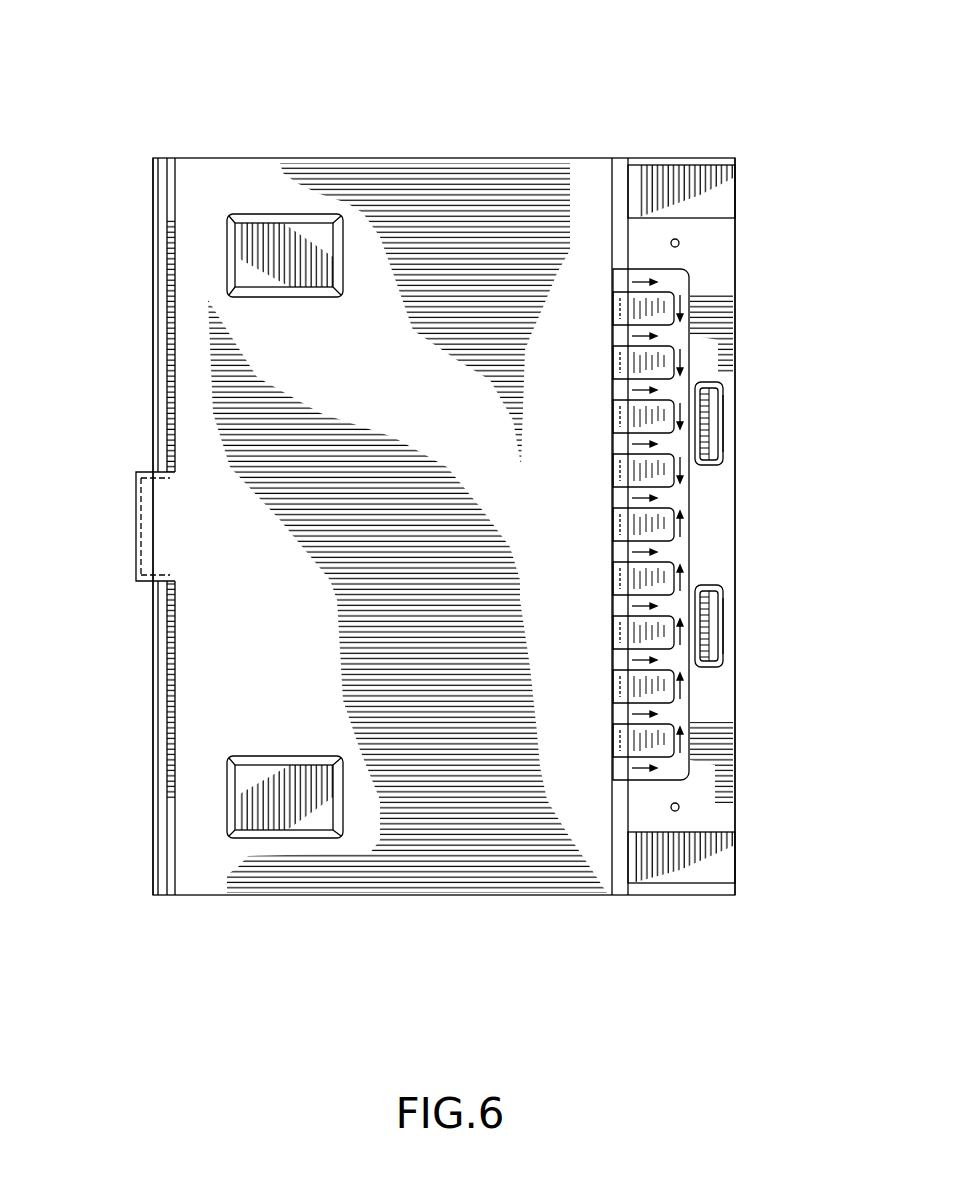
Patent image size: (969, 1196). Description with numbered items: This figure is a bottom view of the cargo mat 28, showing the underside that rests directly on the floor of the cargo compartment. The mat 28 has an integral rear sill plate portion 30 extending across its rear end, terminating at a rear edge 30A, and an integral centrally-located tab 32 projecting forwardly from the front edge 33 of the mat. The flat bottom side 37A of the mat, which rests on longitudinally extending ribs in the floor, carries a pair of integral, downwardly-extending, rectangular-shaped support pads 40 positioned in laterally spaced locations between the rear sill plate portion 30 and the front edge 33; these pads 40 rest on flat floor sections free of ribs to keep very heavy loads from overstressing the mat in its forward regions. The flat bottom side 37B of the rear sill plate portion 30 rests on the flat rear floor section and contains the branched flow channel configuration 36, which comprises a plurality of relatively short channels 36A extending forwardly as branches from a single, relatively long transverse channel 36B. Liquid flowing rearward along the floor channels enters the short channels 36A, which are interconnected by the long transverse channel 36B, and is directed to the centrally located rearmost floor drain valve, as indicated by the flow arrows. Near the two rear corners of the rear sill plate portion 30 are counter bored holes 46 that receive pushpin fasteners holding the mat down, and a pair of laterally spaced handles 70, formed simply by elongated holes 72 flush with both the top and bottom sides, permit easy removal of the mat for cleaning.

The cargo mat 28 is at (345, 124).
The rear sill plate portion 30 is at (735, 136).
The rear edge 30A is at (736, 752).
The tab 32 is at (152, 530).
The front edge 33 is at (150, 800).
The branched flow channel configuration 36 is at (634, 255).
The short channels 36A is at (625, 337).
The long transverse channel 36B is at (686, 540).
The flat bottom side 37A is at (490, 200).
The flat bottom side 37B is at (715, 303).
The support pads 40 is at (250, 245).
The counter bored holes 46 is at (680, 243).
The handles 70 is at (742, 433).
The elongated holes 72 is at (715, 405).